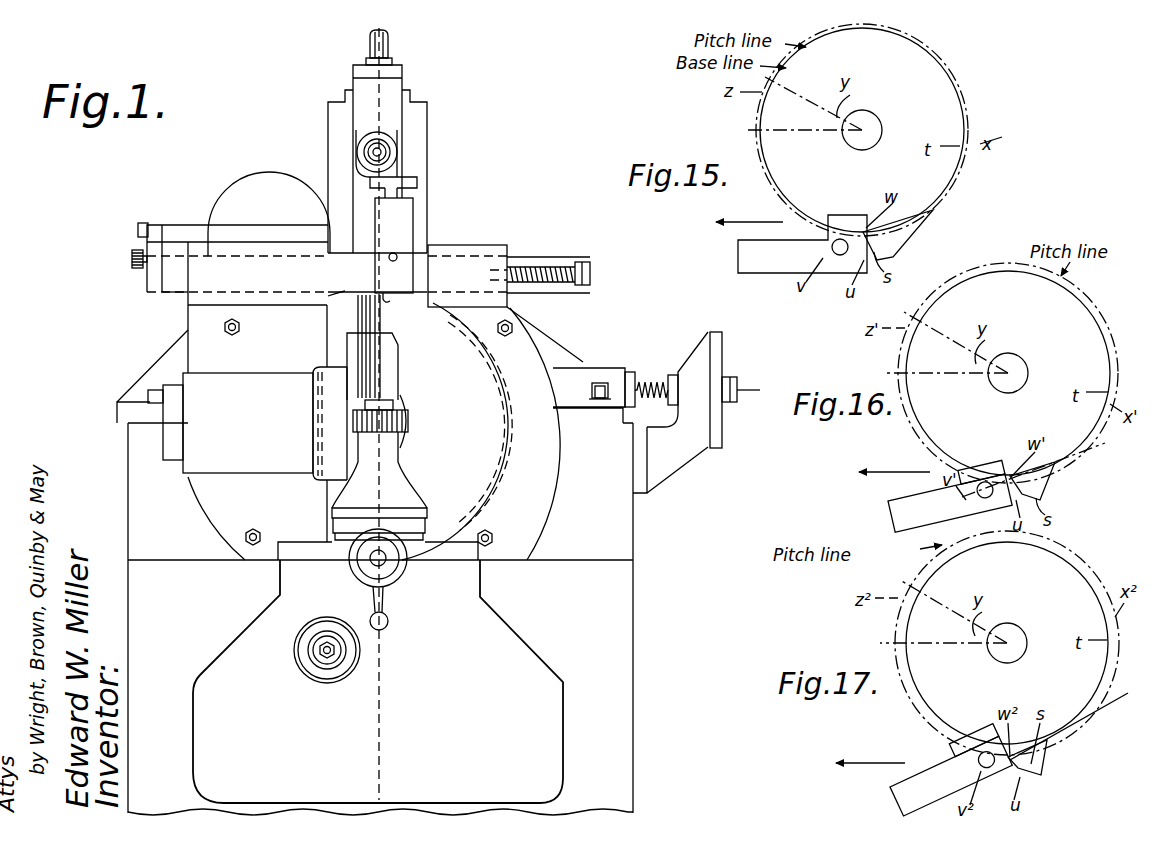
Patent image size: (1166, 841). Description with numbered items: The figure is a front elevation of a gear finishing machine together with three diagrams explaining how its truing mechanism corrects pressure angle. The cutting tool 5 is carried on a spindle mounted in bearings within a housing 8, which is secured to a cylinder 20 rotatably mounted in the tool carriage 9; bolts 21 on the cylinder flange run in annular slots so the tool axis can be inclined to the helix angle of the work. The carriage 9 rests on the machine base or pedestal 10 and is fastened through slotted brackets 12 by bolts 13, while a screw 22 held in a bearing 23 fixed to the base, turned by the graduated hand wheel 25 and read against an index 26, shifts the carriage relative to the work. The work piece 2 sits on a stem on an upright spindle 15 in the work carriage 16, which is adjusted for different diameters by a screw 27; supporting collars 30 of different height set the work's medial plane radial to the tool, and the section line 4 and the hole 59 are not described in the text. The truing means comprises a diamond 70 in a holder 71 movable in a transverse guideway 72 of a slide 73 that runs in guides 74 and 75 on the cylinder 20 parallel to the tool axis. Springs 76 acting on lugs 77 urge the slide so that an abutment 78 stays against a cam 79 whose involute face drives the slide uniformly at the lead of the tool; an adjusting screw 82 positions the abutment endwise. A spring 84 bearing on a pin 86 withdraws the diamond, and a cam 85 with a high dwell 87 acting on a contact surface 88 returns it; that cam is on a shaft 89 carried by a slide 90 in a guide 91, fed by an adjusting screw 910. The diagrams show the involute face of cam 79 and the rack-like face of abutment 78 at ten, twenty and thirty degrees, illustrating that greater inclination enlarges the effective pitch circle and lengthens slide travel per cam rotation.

In FIG. 1, the work piece 2 is at (410, 417).
In FIG. 1, the section line 4 is at (117, 402).
In FIG. 1, the tool 5 is at (372, 355).
In FIG. 1, the housing 8 is at (247, 423).
In FIG. 1, the tool carriage 9 is at (523, 356).
In FIG. 1, the machine base or pedestal 10 is at (618, 624).
In FIG. 1, the brackets 12 is at (135, 408).
In FIG. 1, the bolts 13 is at (600, 383).
In FIG. 1, the spindle 15 is at (415, 527).
In FIG. 1, the work carriage 16 is at (330, 551).
In FIG. 1, the cylinder 20 is at (503, 413).
In FIG. 1, the bolts 21 is at (234, 335).
In FIG. 1, the screw 22 is at (650, 380).
In FIG. 1, the bearing 23 is at (690, 420).
In FIG. 1, the graduated hand wheel 25 is at (719, 352).
In FIG. 1, the index 26 is at (697, 352).
In FIG. 1, the screw 27 is at (395, 564).
In FIG. 1, the supporting collars 30 is at (388, 452).
In FIG. 1, the hole 59 is at (320, 667).
In FIG. 1, the diamond 70 is at (385, 301).
In FIG. 1, the holder 71 is at (415, 190).
In FIG. 1, the transverse guideway 72 is at (400, 230).
In FIG. 1, the slide 73 is at (518, 258).
In FIG. 1, the guide 74 is at (480, 247).
In FIG. 1, the guide 75 is at (218, 296).
In FIG. 1, the springs 76 is at (543, 268).
In FIG. 1, the lugs 77 is at (583, 266).
In FIG. 15, the abutment 78 is at (840, 264).
In FIG. 16, the abutment 78 is at (985, 498).
In FIG. 17, the abutment 78 is at (1000, 777).
In FIG. 15, the cam 79 is at (896, 242).
In FIG. 16, the cam 79 is at (1050, 483).
In FIG. 17, the cam 79 is at (1032, 770).
In FIG. 1, the adjusting screw 82 is at (135, 269).
In FIG. 1, the spring 84 is at (178, 233).
In FIG. 1, the cam 85 is at (357, 153).
In FIG. 1, the pin or bar 86 is at (391, 260).
In FIG. 1, the high dwell 87 is at (354, 165).
In FIG. 1, the transverse contact surface 88 is at (412, 174).
In FIG. 1, the shaft 89 is at (364, 143).
In FIG. 1, the slide 90 is at (367, 90).
In FIG. 1, the guide 91 is at (340, 110).
In FIG. 1, the adjusting screw 910 is at (372, 60).